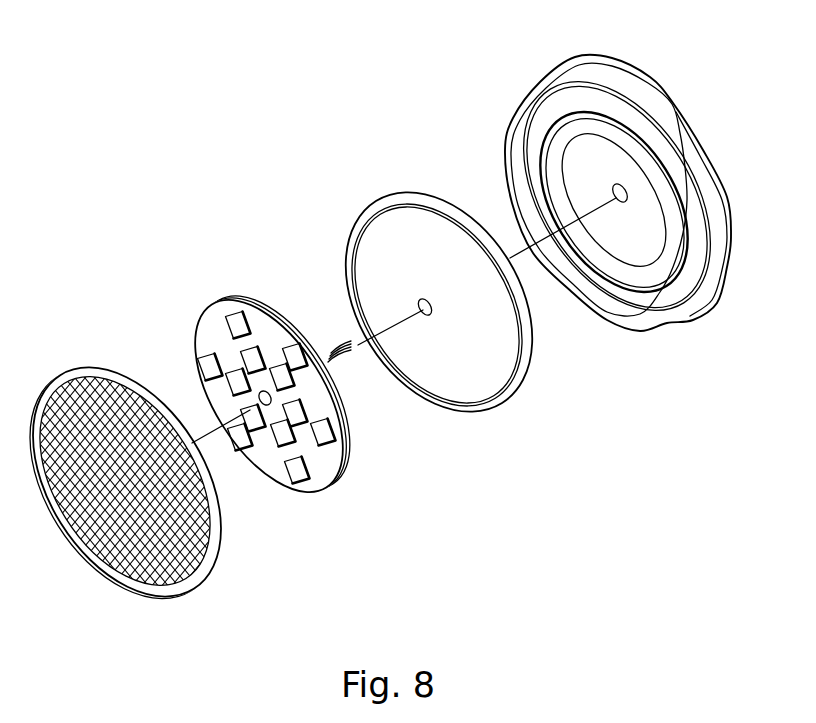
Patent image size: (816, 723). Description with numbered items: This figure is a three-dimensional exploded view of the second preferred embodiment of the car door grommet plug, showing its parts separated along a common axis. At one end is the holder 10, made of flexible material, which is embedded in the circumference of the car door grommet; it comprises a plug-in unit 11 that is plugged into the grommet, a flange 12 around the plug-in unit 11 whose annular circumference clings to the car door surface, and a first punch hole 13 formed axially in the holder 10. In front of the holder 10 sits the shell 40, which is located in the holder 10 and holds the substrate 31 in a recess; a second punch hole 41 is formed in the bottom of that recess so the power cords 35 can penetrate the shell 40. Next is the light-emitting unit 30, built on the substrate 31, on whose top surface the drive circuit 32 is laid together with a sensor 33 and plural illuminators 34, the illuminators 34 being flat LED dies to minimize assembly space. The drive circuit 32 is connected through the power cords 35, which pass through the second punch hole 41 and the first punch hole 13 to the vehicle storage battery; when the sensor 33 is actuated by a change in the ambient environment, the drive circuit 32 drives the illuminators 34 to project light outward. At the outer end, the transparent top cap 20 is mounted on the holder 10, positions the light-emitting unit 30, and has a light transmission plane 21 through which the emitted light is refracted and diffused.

The holder 10 is at (512, 88).
The plug-in unit 11 is at (700, 126).
The flange 12 is at (616, 76).
The first punch hole 13 is at (617, 203).
The top cap 20 is at (61, 364).
The light transmission plane 21 is at (115, 568).
The light-emitting unit 30 is at (192, 306).
The substrate 31 is at (341, 471).
The drive circuit 32 is at (270, 467).
The sensor 33 is at (273, 398).
The illuminators 34 is at (197, 352).
The power cords 35 is at (340, 347).
The shell 40 is at (352, 212).
The second punch hole 41 is at (428, 316).